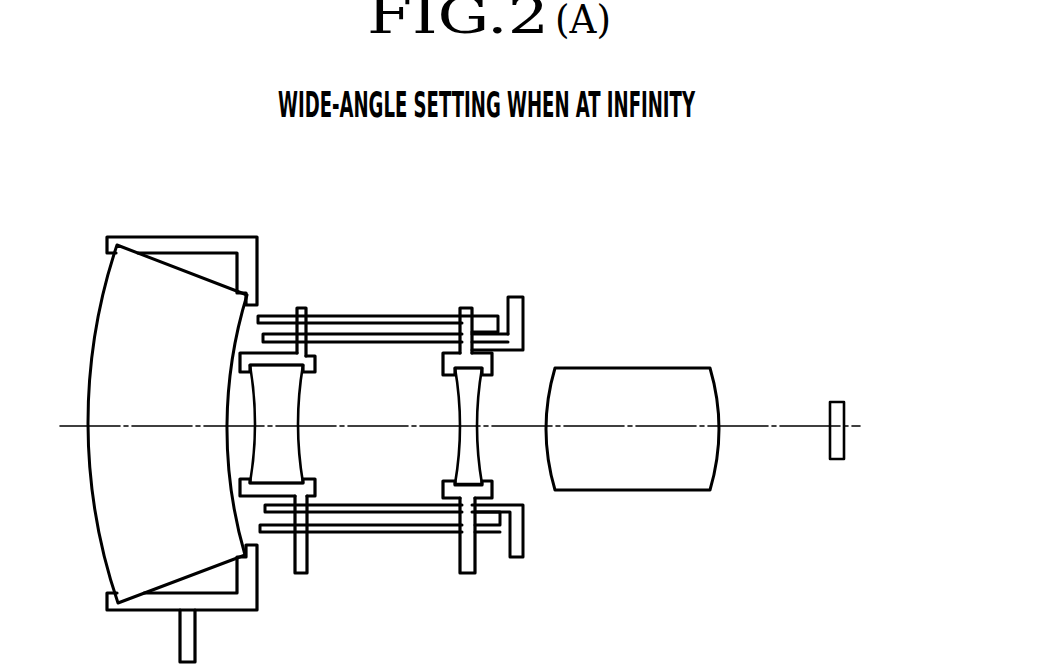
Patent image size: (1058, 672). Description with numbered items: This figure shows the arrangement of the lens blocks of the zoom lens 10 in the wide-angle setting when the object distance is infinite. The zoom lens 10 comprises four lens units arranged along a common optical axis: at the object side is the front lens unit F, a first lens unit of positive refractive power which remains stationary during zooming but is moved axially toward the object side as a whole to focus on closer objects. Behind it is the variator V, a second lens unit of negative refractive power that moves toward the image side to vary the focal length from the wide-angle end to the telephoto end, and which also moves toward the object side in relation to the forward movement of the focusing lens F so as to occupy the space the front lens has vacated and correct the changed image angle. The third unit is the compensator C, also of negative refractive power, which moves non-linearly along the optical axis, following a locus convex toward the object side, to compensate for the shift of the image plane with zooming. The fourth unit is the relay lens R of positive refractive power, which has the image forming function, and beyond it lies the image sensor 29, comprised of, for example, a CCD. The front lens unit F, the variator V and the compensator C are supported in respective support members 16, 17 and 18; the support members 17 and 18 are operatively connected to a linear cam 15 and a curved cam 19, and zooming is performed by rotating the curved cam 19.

The zoom lens 10 is at (717, 215).
The linear cam 15 is at (382, 528).
The support member 16 is at (250, 268).
The support member 17 is at (300, 303).
The support member 18 is at (466, 308).
The curved cam 19 is at (517, 538).
The image sensor 29 is at (833, 397).
The front lens unit F is at (115, 293).
The variator V is at (285, 403).
The compensator C is at (463, 400).
The relay lens R is at (618, 378).